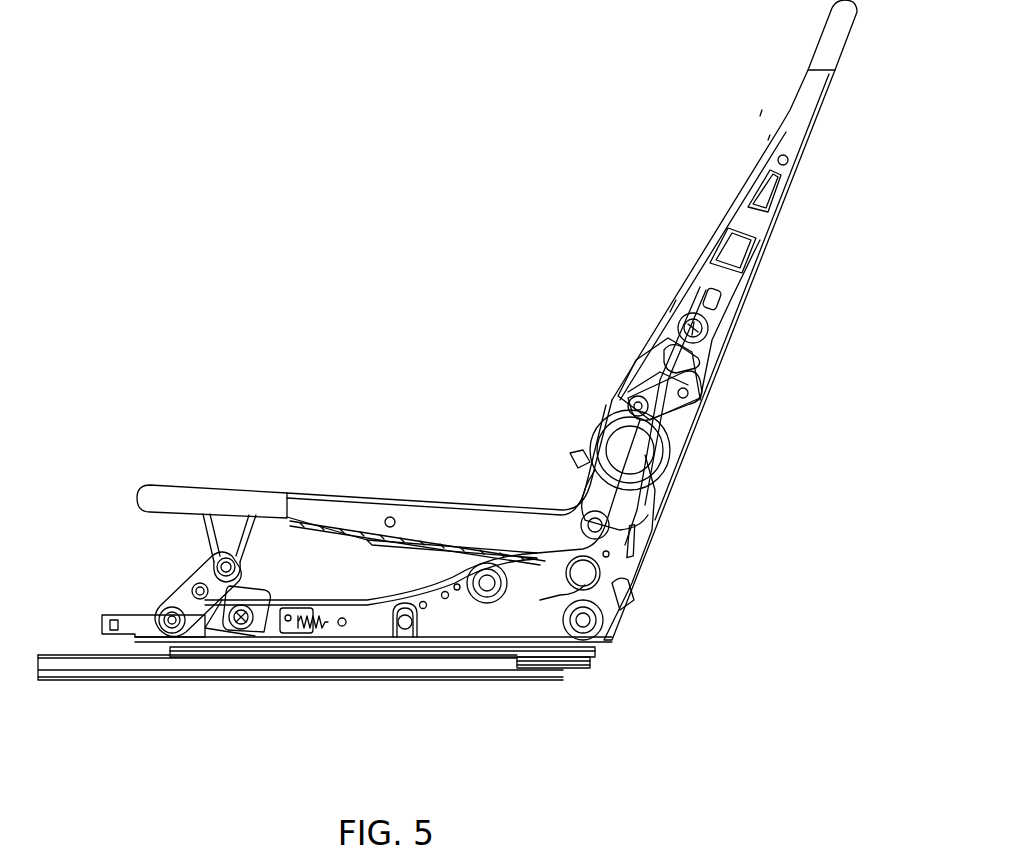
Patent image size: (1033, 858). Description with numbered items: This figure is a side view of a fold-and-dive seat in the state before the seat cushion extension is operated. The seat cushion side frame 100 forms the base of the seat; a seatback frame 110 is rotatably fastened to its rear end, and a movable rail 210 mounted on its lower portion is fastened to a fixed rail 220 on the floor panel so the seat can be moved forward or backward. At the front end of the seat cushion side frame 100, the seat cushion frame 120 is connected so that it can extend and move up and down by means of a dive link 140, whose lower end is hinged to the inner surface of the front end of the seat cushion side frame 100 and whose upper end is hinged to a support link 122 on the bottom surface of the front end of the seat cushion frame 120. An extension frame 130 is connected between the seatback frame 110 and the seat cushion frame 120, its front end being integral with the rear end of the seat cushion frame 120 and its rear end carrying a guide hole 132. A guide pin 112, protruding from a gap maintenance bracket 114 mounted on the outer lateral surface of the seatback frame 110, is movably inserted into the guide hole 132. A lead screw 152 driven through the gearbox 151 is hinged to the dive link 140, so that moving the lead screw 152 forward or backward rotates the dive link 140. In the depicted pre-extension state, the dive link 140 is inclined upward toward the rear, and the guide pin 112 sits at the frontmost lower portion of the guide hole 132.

The seat cushion side frame 100 is at (460, 628).
The seatback frame 110 is at (704, 270).
The guide pin 112 is at (635, 398).
The gap maintenance bracket 114 is at (652, 368).
The seat cushion frame 120 is at (167, 497).
The support link 122 is at (218, 530).
The extension frame 130 is at (500, 517).
The guide hole 132 is at (693, 388).
The dive link 140 is at (197, 570).
The gearbox 151 is at (243, 583).
The lead screw 152 is at (300, 627).
The movable rail 210 is at (595, 648).
The fixed rail 220 is at (82, 668).